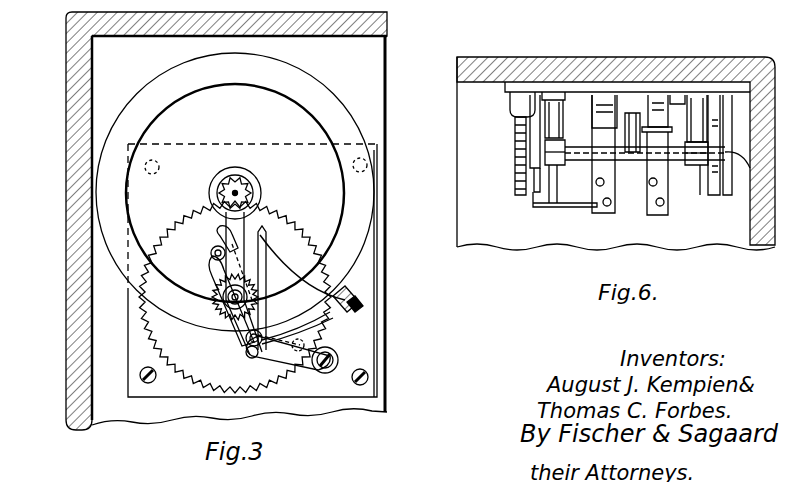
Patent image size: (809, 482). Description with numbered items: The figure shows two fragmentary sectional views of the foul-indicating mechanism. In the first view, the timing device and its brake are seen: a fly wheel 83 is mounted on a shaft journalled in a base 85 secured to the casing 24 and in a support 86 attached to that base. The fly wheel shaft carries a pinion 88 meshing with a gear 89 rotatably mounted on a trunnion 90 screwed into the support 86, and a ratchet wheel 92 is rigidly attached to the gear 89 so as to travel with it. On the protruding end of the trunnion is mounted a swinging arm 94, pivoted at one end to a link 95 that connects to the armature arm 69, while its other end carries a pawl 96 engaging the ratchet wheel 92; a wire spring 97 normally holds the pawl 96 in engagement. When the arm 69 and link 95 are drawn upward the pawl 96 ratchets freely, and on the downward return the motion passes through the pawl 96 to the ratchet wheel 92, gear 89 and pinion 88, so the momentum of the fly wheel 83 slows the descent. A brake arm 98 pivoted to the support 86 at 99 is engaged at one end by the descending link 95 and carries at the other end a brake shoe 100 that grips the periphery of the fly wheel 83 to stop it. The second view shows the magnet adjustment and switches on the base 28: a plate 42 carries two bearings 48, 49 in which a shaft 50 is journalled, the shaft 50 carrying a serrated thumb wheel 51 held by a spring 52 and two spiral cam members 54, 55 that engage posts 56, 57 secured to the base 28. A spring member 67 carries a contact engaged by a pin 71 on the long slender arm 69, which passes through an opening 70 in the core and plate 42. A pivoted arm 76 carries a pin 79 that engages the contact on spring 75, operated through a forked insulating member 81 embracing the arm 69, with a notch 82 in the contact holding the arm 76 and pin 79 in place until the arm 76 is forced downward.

In FIG. 3, the casing 24 is at (72, 380).
In FIG. 3, the fly wheel 83 is at (318, 97).
In FIG. 3, the base 85 is at (355, 358).
In FIG. 3, the support 86 is at (240, 232).
In FIG. 3, the pinion 88 is at (240, 186).
In FIG. 3, the gear 89 is at (193, 208).
In FIG. 3, the trunnion 90 is at (216, 312).
In FIG. 3, the ratchet wheel 92 is at (214, 295).
In FIG. 3, the swinging arm 94 is at (222, 270).
In FIG. 3, the link 95 is at (260, 257).
In FIG. 3, the pawl 96 is at (210, 256).
In FIG. 3, the wire spring 97 is at (215, 232).
In FIG. 3, the brake arm 98 is at (340, 322).
In FIG. 3, the pivot 99 is at (304, 345).
In FIG. 3, the brake shoe 100 is at (350, 292).
In FIG. 6, the base 28 is at (518, 88).
In FIG. 6, the plate 42 is at (532, 204).
In FIG. 6, the bearing 48 is at (548, 172).
In FIG. 6, the bearing 49 is at (716, 180).
In FIG. 6, the shaft 50 is at (735, 200).
In FIG. 6, the thumb wheel 51 is at (522, 141).
In FIG. 6, the spring 52 is at (512, 106).
In FIG. 6, the spiral cam member 54 is at (556, 168).
In FIG. 6, the spiral cam member 55 is at (700, 190).
In FIG. 6, the post 56 is at (516, 130).
In FIG. 6, the post 57 is at (740, 61).
In FIG. 6, the spring member 67 is at (603, 162).
In FIG. 6, the arm 69 is at (658, 100).
In FIG. 6, the opening 70 is at (632, 112).
In FIG. 6, the pin 71 is at (588, 126).
In FIG. 6, the spring 75 is at (663, 188).
In FIG. 6, the pivoted arm 76 is at (692, 106).
In FIG. 6, the pin 79 is at (710, 104).
In FIG. 6, the forked insulating member 81 is at (612, 106).
In FIG. 6, the notch 82 is at (680, 100).